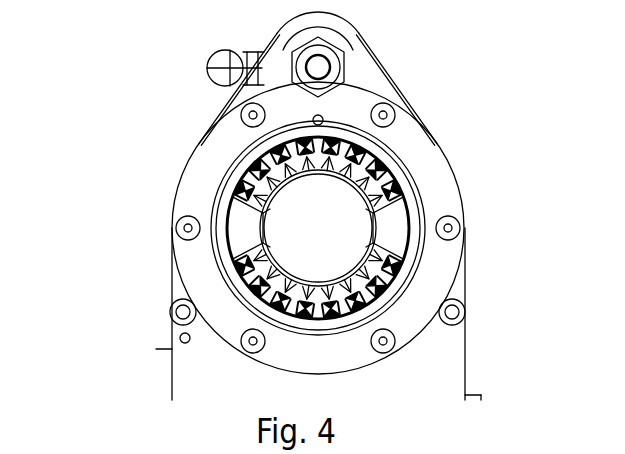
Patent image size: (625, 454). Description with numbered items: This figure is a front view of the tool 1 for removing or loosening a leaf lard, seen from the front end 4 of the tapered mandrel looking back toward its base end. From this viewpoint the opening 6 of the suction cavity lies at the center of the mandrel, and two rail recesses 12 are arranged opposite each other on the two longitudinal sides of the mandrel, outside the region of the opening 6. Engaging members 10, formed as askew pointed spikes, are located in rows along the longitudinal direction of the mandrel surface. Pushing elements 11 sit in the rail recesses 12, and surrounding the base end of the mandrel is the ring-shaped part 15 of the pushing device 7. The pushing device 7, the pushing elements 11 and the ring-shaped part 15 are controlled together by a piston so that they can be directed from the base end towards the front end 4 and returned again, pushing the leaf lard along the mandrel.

The tool 1 is at (118, 63).
The front end 4 is at (326, 242).
The opening 6 is at (363, 140).
The pushing device 7 is at (212, 190).
The engaging members 10 is at (310, 315).
The pushing elements 11 is at (237, 230).
The rail recesses 12 is at (260, 226).
The ring-shaped part 15 is at (212, 245).